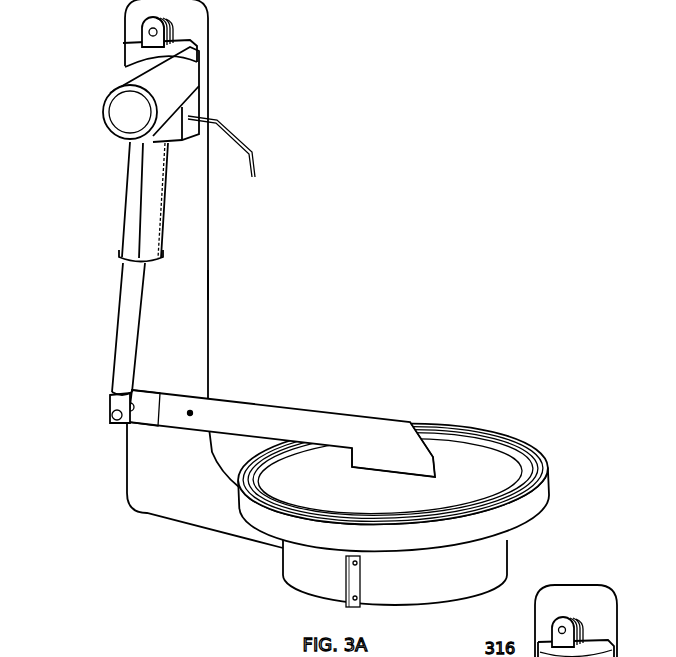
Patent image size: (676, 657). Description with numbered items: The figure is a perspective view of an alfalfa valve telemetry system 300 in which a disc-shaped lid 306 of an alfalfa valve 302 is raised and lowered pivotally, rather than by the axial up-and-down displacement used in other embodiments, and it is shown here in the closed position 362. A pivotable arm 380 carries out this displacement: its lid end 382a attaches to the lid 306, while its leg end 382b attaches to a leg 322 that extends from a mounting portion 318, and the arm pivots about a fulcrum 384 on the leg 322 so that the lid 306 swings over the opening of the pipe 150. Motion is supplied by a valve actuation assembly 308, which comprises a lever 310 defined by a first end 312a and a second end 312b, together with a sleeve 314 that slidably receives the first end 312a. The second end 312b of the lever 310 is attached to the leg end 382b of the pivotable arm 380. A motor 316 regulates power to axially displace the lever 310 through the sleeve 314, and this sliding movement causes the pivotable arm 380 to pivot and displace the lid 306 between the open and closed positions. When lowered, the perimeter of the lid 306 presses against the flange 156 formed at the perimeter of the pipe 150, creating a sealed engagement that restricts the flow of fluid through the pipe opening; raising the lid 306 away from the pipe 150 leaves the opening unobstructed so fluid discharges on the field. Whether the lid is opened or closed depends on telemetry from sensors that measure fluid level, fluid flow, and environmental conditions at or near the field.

The alfalfa valve telemetry system 300 is at (417, 92).
The alfalfa valve 302 is at (432, 417).
The lid 306 is at (350, 500).
The valve actuation assembly 308 is at (198, 250).
The lever 310 is at (125, 353).
The first end 312a is at (127, 275).
The second end 312b is at (110, 392).
The sleeve 314 is at (128, 205).
The motor 316 is at (130, 65).
The mounting portion 318 is at (227, 108).
The leg 322 is at (190, 283).
The closed position 362 is at (407, 365).
The pivotable arm 380 is at (303, 418).
The lid end 382a is at (408, 450).
The leg end 382b is at (153, 410).
The fulcrum 384 is at (192, 413).
The pipe 150 is at (195, 563).
The flange 156 is at (548, 460).